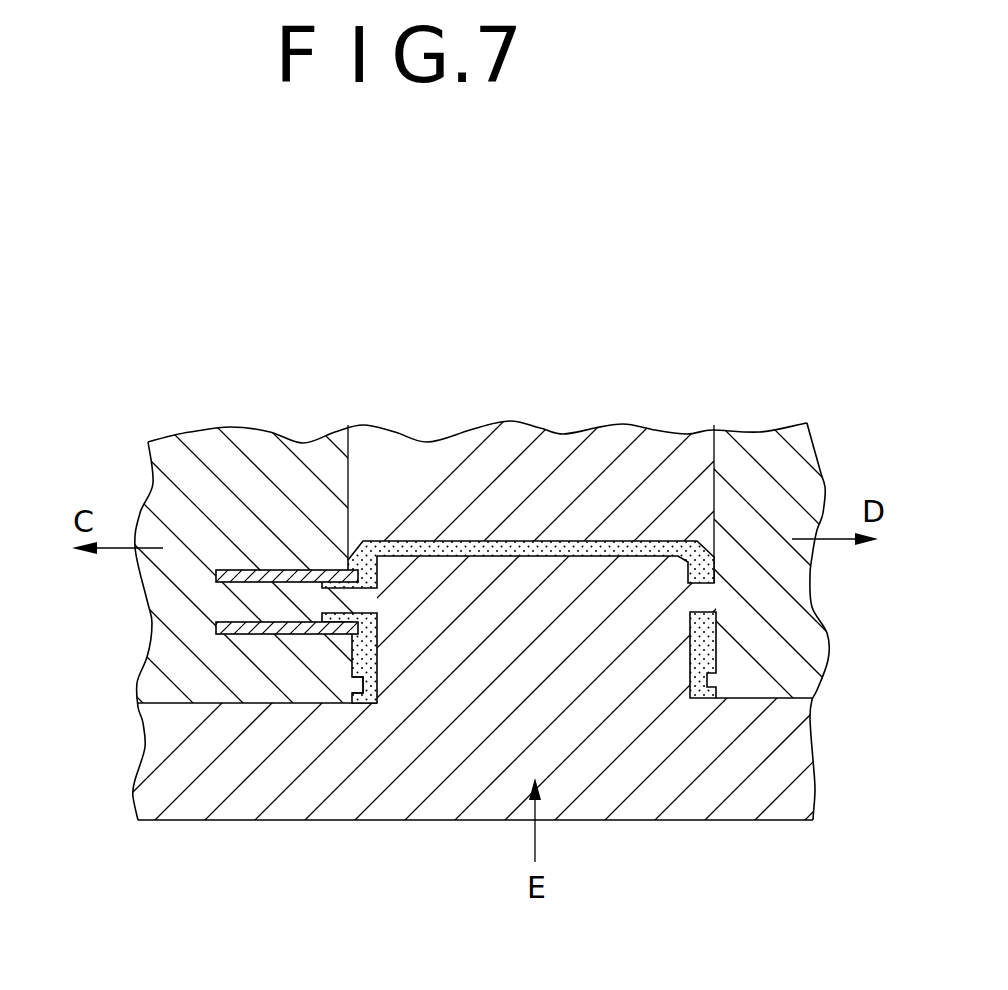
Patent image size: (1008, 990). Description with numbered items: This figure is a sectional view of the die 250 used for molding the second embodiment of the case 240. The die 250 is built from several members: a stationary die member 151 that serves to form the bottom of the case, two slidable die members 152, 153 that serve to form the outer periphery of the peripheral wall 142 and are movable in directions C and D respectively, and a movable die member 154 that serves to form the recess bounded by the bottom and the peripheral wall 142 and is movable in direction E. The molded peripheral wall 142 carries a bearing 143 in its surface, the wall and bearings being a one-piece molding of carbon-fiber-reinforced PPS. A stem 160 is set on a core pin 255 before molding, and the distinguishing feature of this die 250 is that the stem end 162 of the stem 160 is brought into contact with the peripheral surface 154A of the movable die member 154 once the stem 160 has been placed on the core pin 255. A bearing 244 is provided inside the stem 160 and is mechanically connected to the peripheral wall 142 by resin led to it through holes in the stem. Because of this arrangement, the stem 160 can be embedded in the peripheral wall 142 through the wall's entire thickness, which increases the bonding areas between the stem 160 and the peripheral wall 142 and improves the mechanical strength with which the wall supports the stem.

The peripheral wall 142 is at (485, 557).
The bearing 143 is at (703, 610).
The stationary die member 151 is at (600, 457).
The slidable die member 152 is at (195, 463).
The slidable die member 153 is at (778, 452).
The movable die member 154 is at (448, 785).
The peripheral surface of the movable die member 154A is at (352, 690).
The stem 160 is at (215, 628).
The stem end 162 is at (393, 537).
The case 240 is at (622, 538).
The bearing 244 is at (345, 565).
The die 250 is at (452, 400).
The core pin 255 is at (278, 602).